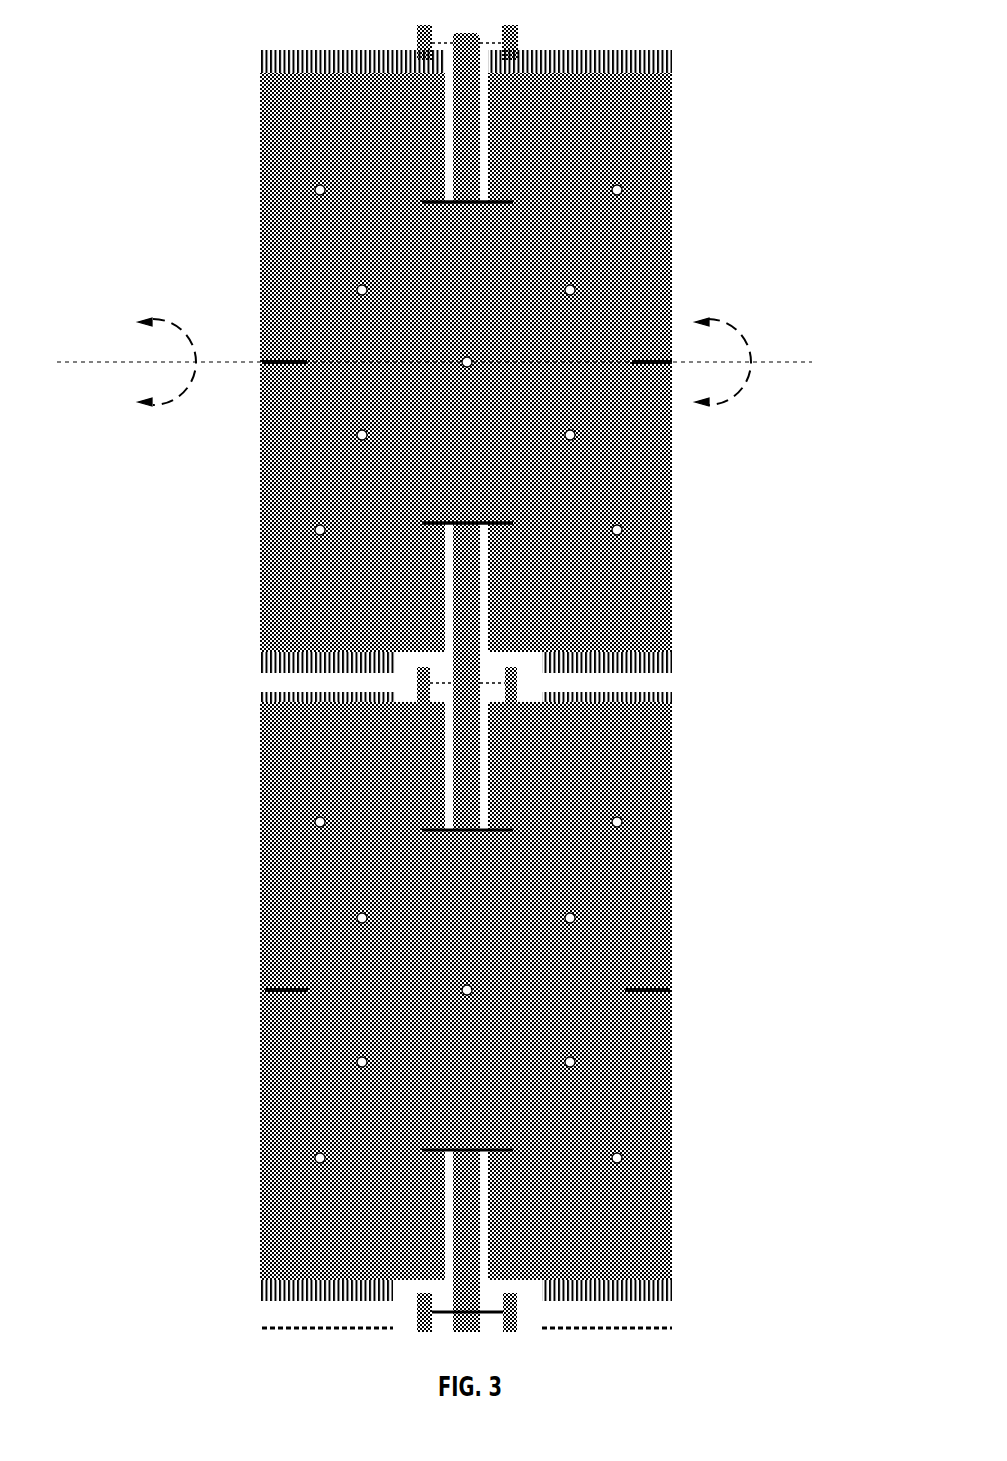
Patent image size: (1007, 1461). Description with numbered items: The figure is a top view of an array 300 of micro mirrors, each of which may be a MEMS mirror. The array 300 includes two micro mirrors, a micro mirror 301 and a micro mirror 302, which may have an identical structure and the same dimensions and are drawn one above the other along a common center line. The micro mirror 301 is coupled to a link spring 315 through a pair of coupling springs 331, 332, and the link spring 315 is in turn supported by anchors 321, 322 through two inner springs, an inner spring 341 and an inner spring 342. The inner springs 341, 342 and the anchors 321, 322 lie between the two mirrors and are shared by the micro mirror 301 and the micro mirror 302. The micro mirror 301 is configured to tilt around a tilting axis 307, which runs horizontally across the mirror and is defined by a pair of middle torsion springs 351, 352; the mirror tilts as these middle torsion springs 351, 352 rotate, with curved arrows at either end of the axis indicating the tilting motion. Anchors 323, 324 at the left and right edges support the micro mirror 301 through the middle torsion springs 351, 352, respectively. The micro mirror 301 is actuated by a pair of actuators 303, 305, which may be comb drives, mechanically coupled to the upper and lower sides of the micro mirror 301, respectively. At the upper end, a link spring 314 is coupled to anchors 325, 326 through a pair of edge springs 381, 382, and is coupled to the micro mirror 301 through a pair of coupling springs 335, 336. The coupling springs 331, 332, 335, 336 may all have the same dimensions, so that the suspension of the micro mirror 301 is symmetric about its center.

The array of micro mirrors 300 is at (427, 678).
The micro mirror 301 is at (466, 362).
The micro mirror 302 is at (466, 991).
The actuator 303 is at (262, 68).
The actuator 305 is at (262, 660).
The tilting axis 307 is at (108, 360).
The link spring 314 is at (455, 175).
The link spring 315 is at (468, 561).
The anchor 321 is at (417, 683).
The anchor 322 is at (517, 683).
The anchor 323 is at (262, 352).
The anchor 324 is at (672, 352).
The anchor 325 is at (417, 43).
The anchor 326 is at (518, 43).
The coupling spring 331 is at (437, 520).
The coupling spring 332 is at (497, 520).
The coupling spring 335 is at (440, 208).
The coupling spring 336 is at (500, 208).
The inner spring 341 is at (438, 680).
The inner spring 342 is at (497, 680).
The middle torsion spring 351 is at (283, 368).
The middle torsion spring 352 is at (640, 368).
The edge spring 381 is at (443, 42).
The edge spring 382 is at (493, 42).